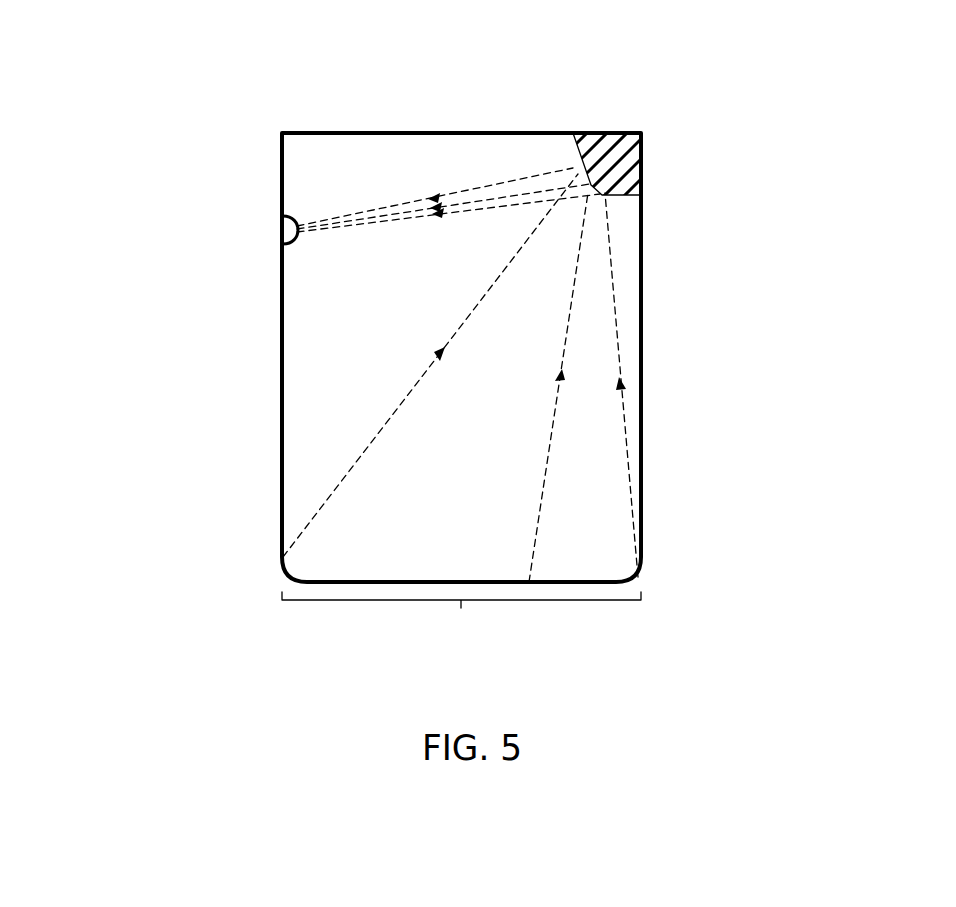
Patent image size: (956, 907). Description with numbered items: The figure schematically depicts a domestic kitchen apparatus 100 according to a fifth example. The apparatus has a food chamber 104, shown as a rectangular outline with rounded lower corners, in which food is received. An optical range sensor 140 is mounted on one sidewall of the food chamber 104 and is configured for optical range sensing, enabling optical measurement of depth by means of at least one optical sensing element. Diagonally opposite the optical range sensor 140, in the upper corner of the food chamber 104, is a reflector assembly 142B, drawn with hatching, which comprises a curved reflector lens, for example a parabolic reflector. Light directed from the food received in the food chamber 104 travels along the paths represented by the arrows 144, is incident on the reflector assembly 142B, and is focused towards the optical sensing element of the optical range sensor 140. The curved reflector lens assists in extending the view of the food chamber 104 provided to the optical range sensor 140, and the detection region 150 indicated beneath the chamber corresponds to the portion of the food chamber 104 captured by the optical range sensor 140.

The domestic kitchen apparatus 100 is at (134, 107).
The food chamber 104 is at (328, 403).
The optical range sensor 140 is at (285, 227).
The reflector assembly 142B is at (641, 138).
The arrows 144 is at (355, 465).
The detection region 150 is at (461, 618).